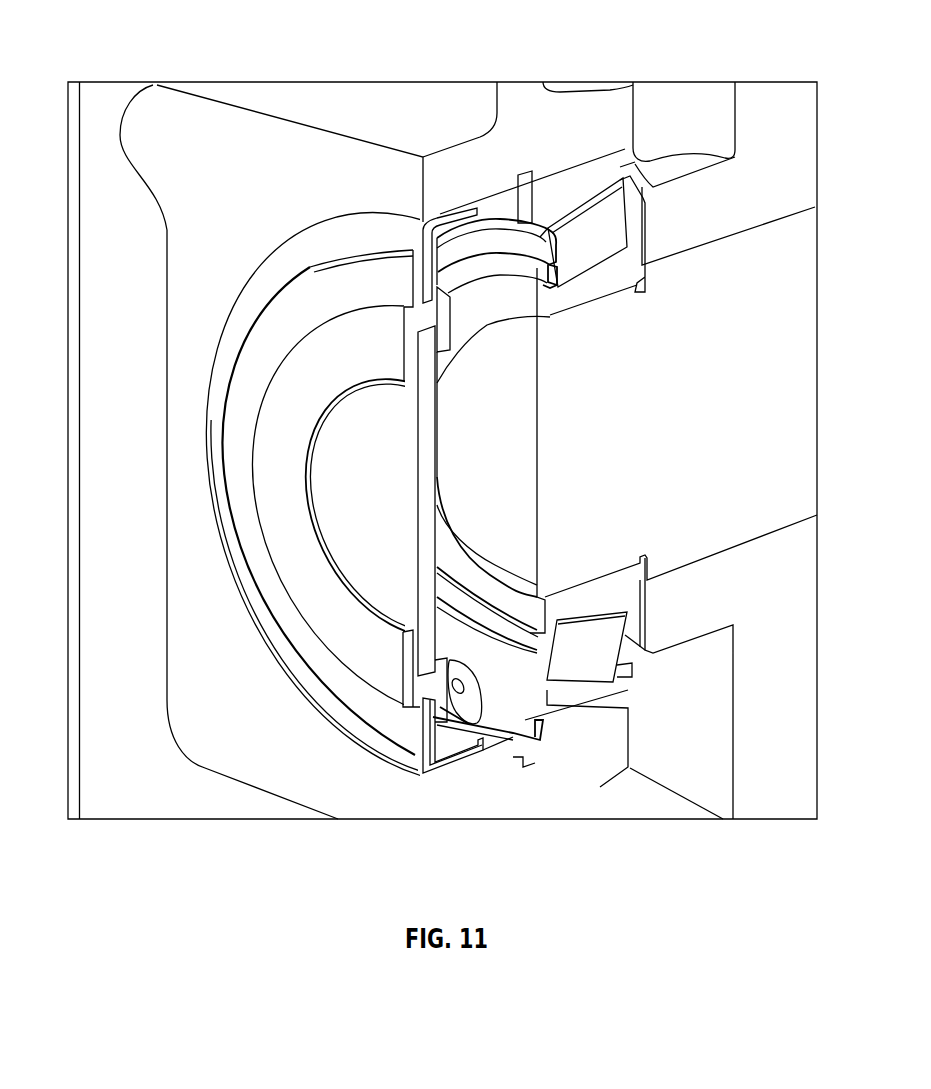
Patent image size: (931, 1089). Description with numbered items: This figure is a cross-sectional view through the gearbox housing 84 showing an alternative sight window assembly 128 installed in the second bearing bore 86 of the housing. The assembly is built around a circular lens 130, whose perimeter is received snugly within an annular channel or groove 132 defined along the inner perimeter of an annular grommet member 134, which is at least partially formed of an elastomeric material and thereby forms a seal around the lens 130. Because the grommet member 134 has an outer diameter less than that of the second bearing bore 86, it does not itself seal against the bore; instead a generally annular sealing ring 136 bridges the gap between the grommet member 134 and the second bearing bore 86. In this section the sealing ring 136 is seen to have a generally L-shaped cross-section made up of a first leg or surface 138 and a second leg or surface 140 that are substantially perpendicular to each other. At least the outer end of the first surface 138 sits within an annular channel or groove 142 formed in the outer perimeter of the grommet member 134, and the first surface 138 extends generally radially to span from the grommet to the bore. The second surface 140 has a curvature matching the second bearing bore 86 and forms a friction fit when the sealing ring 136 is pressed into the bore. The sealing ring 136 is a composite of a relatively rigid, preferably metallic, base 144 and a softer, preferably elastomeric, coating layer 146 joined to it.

The gearbox housing 84 is at (95, 104).
The second bearing bore 86 is at (500, 750).
The sight window assembly 128 is at (237, 675).
The lens 130 is at (337, 455).
The annular channel or groove 132 is at (420, 657).
The grommet member 134 is at (260, 345).
The sealing ring 136 is at (273, 263).
The first leg or surface 138 is at (427, 230).
The second leg or surface 140 is at (451, 214).
The annular channel or groove 142 is at (420, 742).
The base 144 is at (483, 734).
The coating layer 146 is at (443, 734).